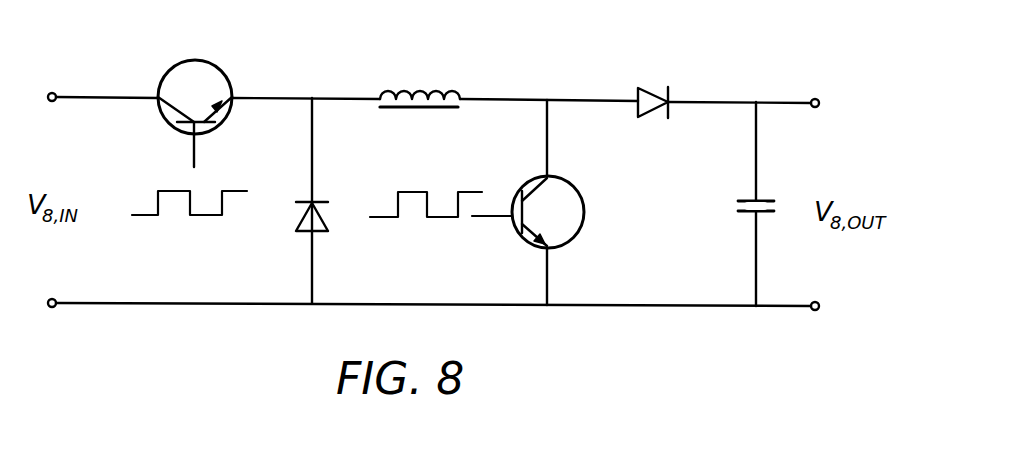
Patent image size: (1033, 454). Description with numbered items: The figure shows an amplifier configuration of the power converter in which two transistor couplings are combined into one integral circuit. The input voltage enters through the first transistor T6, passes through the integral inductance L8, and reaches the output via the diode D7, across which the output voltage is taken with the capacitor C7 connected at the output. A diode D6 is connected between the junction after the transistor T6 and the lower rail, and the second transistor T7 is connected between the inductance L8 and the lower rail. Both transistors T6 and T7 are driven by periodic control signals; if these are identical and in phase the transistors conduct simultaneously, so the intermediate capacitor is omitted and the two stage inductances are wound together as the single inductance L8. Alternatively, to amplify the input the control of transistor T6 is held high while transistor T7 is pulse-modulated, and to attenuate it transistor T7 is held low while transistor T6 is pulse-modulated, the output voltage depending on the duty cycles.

The transistor T6 is at (202, 99).
The integral inductance L8 is at (420, 71).
The output diode D7 is at (658, 79).
The freewheeling diode D6 is at (327, 236).
The transistor T7 is at (565, 212).
The output capacitor C7 is at (736, 215).